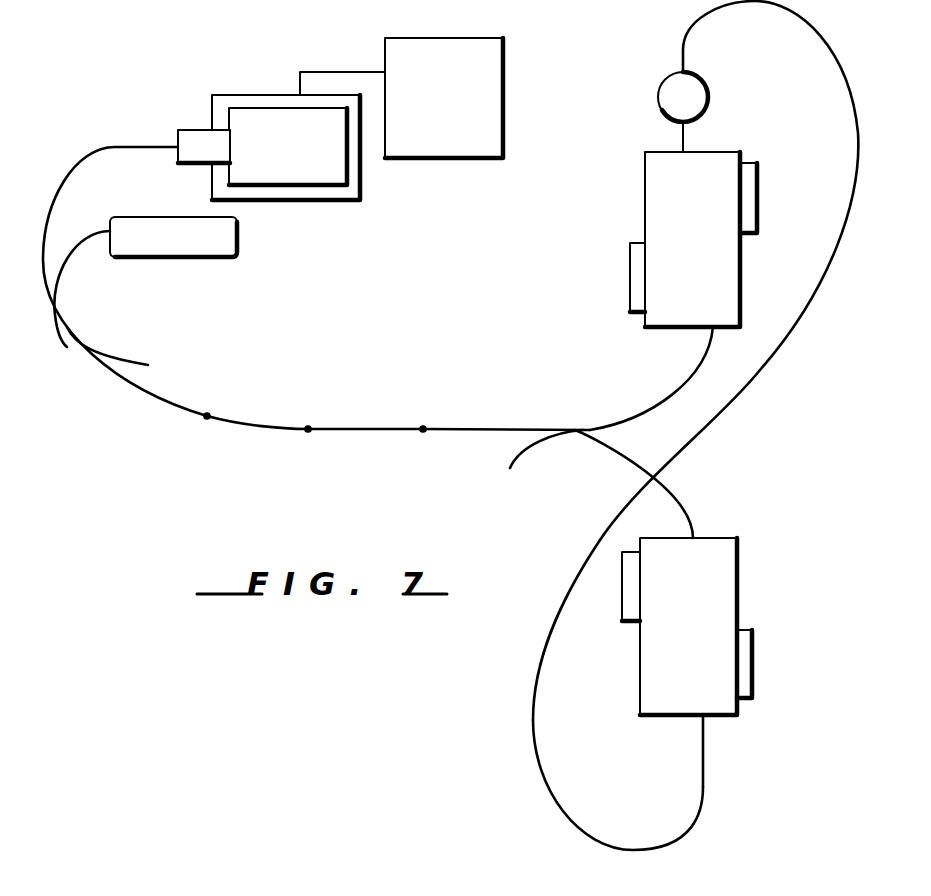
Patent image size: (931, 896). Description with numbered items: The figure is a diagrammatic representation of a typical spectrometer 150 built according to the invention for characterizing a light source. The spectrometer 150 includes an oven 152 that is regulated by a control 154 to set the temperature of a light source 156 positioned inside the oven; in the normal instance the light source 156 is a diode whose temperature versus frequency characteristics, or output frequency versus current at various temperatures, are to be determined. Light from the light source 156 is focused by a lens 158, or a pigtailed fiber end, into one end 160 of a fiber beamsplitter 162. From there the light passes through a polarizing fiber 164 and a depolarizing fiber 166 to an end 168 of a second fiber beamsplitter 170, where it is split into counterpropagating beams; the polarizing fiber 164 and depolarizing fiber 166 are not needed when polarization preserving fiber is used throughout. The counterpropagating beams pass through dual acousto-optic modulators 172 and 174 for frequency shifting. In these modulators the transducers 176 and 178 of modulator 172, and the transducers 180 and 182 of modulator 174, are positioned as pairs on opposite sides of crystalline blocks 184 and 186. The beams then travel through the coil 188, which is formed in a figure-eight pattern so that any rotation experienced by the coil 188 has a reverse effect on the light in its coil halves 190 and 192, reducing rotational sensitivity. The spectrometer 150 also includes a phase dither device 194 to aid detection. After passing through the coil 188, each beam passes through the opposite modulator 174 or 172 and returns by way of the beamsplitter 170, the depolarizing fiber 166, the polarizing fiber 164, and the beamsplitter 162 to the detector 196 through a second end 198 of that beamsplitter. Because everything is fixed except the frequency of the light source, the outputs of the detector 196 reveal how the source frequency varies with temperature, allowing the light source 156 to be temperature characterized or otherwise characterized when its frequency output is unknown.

The spectrometer 150 is at (528, 203).
The oven 152 is at (362, 173).
The control 154 is at (505, 66).
The light source 156 is at (323, 182).
The lens 158 is at (193, 130).
The end of fiber beamsplitter 160 is at (84, 152).
The fiber beamsplitter 162 is at (62, 305).
The polarizing fiber 164 is at (257, 423).
The depolarizing fiber 166 is at (362, 427).
The end of second fiber beamsplitter 168 is at (465, 427).
The second fiber beamsplitter 170 is at (575, 427).
The acousto-optic modulator 172 is at (742, 277).
The acousto-optic modulator 174 is at (738, 563).
The transducer 176 is at (758, 187).
The transducer 178 is at (630, 253).
The transducer 180 is at (752, 662).
The transducer 182 is at (621, 598).
The crystalline block 184 is at (724, 328).
The crystalline block 186 is at (720, 717).
The coil 188 is at (563, 597).
The coil half 190 is at (815, 292).
The coil half 192 is at (705, 792).
The phase dither device 194 is at (706, 82).
The detector 196 is at (205, 257).
The second end of fiber beamsplitter 198 is at (68, 240).